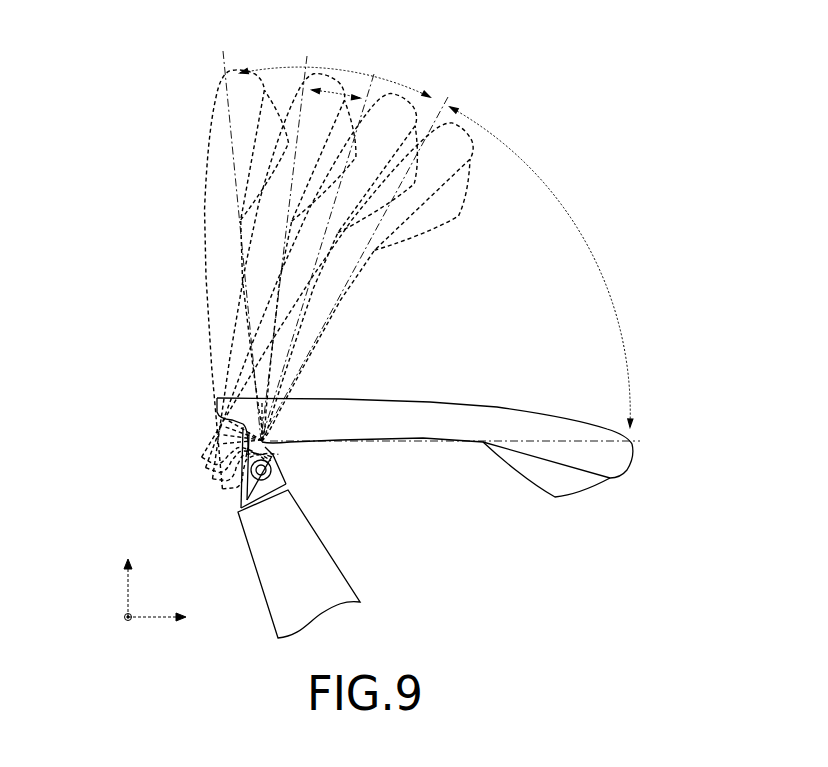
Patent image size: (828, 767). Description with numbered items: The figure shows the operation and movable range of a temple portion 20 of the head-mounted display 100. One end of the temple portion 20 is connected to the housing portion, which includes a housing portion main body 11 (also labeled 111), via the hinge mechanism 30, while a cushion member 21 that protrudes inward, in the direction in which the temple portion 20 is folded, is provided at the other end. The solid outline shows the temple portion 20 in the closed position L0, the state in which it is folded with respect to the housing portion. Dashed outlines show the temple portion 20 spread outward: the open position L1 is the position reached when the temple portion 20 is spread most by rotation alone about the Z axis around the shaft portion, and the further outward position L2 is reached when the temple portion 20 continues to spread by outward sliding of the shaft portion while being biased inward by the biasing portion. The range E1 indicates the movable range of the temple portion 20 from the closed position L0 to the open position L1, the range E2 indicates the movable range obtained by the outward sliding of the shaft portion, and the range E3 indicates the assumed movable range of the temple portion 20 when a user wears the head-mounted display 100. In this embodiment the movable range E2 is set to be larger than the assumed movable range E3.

The head-mounted display 100 is at (153, 77).
The temple portion 20 is at (408, 415).
The cushion member 21 is at (552, 537).
The hinge mechanism 30 is at (296, 465).
The housing portion main body 11 is at (353, 564).
The arm head main body 111 is at (330, 572).
The closed position L0 is at (661, 443).
The open position L1 is at (456, 79).
The reference line L2 is at (222, 38).
The movable range from closed position to open position E1 is at (541, 267).
The movable range by outward sliding of shaft portion E2 is at (335, 68).
The assumed movable range E3 is at (336, 107).